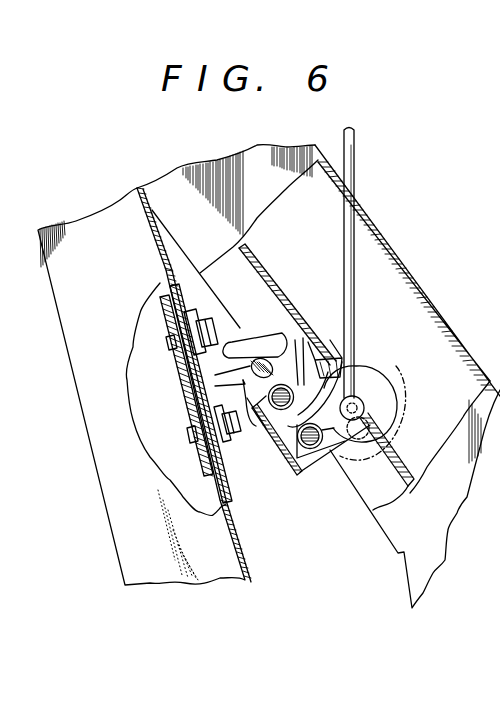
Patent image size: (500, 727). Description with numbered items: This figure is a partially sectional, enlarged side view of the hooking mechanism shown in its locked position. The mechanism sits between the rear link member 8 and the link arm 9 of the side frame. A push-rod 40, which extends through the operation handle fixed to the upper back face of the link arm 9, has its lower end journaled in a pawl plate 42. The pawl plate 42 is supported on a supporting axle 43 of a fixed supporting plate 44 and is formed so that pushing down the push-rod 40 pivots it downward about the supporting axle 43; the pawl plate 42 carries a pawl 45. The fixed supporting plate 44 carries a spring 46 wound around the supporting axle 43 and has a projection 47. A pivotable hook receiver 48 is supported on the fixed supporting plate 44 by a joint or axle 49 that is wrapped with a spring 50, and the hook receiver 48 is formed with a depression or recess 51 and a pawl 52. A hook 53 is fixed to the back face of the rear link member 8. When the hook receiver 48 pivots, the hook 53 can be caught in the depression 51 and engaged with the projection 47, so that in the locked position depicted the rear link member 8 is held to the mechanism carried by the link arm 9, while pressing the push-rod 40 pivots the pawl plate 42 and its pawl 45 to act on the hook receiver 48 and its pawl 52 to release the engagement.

The rear link member 8 is at (86, 414).
The link arm 9 is at (417, 272).
The push-rod 40 is at (355, 186).
The pawl plate 42 is at (372, 395).
The supporting axle 43 is at (310, 460).
The fixed supporting plate 44 is at (290, 470).
The pawl 45 is at (354, 358).
The spring 46 is at (336, 458).
The projection 47 is at (238, 350).
The pivotable hook receiver 48 is at (245, 422).
The joint or axle 49 is at (271, 441).
The spring 50 is at (297, 340).
The depression or recess 51 is at (197, 395).
The pawl 52 is at (318, 360).
The hook 53 is at (196, 367).